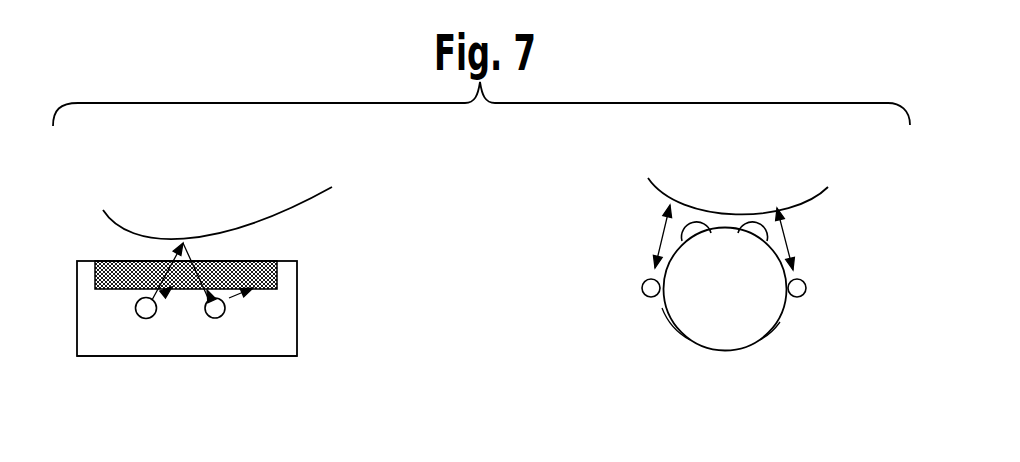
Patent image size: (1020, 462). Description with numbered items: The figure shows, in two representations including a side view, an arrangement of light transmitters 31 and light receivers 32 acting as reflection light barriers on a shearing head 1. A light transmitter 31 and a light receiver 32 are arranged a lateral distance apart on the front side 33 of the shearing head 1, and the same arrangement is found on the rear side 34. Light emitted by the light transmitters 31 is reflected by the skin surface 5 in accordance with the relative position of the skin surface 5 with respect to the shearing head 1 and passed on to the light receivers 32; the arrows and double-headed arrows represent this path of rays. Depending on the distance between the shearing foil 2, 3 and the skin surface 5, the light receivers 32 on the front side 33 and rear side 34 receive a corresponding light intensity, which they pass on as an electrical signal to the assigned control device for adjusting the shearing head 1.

The shearing head 1 is at (305, 339).
The shearing foil 2 is at (290, 290).
The shearing foil 3 is at (755, 232).
The skin surface 5 is at (281, 218).
The light transmitter 31 is at (227, 260).
The light receiver 32 is at (277, 275).
The front side 33 is at (232, 342).
The rear side 34 is at (780, 322).